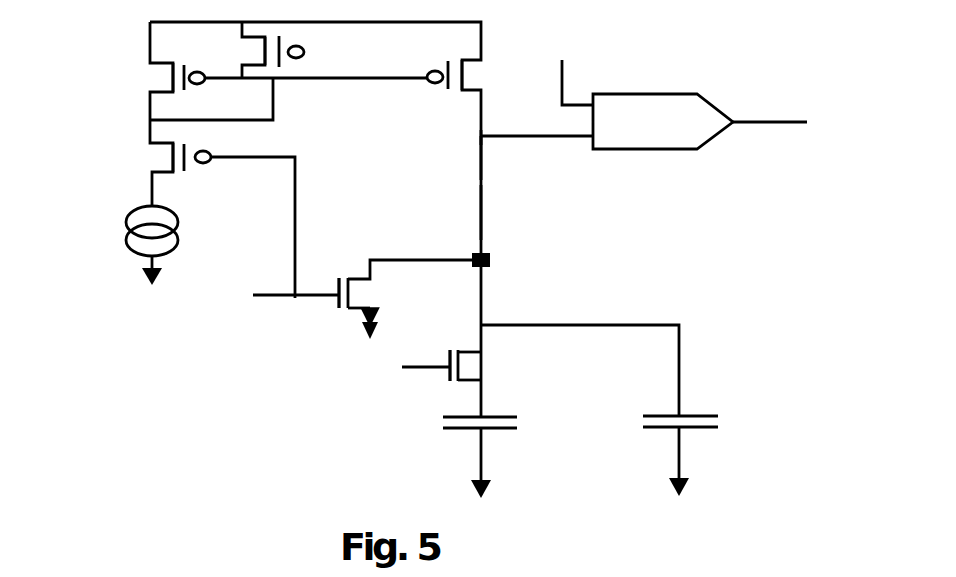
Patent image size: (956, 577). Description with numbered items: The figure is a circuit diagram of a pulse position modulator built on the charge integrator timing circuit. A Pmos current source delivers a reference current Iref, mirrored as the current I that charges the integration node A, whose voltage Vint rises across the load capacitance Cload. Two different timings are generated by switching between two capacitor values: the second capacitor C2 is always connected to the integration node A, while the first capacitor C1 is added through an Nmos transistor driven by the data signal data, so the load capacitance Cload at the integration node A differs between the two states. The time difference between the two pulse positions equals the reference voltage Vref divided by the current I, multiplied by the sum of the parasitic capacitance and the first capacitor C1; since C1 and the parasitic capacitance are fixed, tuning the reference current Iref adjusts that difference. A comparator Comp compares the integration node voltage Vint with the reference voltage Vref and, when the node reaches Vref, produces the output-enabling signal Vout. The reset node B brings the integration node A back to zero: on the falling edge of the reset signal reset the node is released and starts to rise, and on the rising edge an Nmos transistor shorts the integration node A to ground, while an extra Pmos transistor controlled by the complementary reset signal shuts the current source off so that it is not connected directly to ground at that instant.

The reset signal reset is at (410, 35).
The reset node B is at (295, 298).
The reference current Iref is at (113, 210).
The reference voltage Vref is at (578, 72).
The comparator Comp is at (663, 121).
The output voltage Vout is at (772, 110).
The current I is at (465, 120).
The integration node A is at (483, 138).
The load capacitance Cload is at (534, 212).
The integration node voltage Vint is at (519, 263).
The data signal data is at (445, 367).
The first capacitor C1 is at (454, 424).
The second capacitor C2 is at (655, 425).